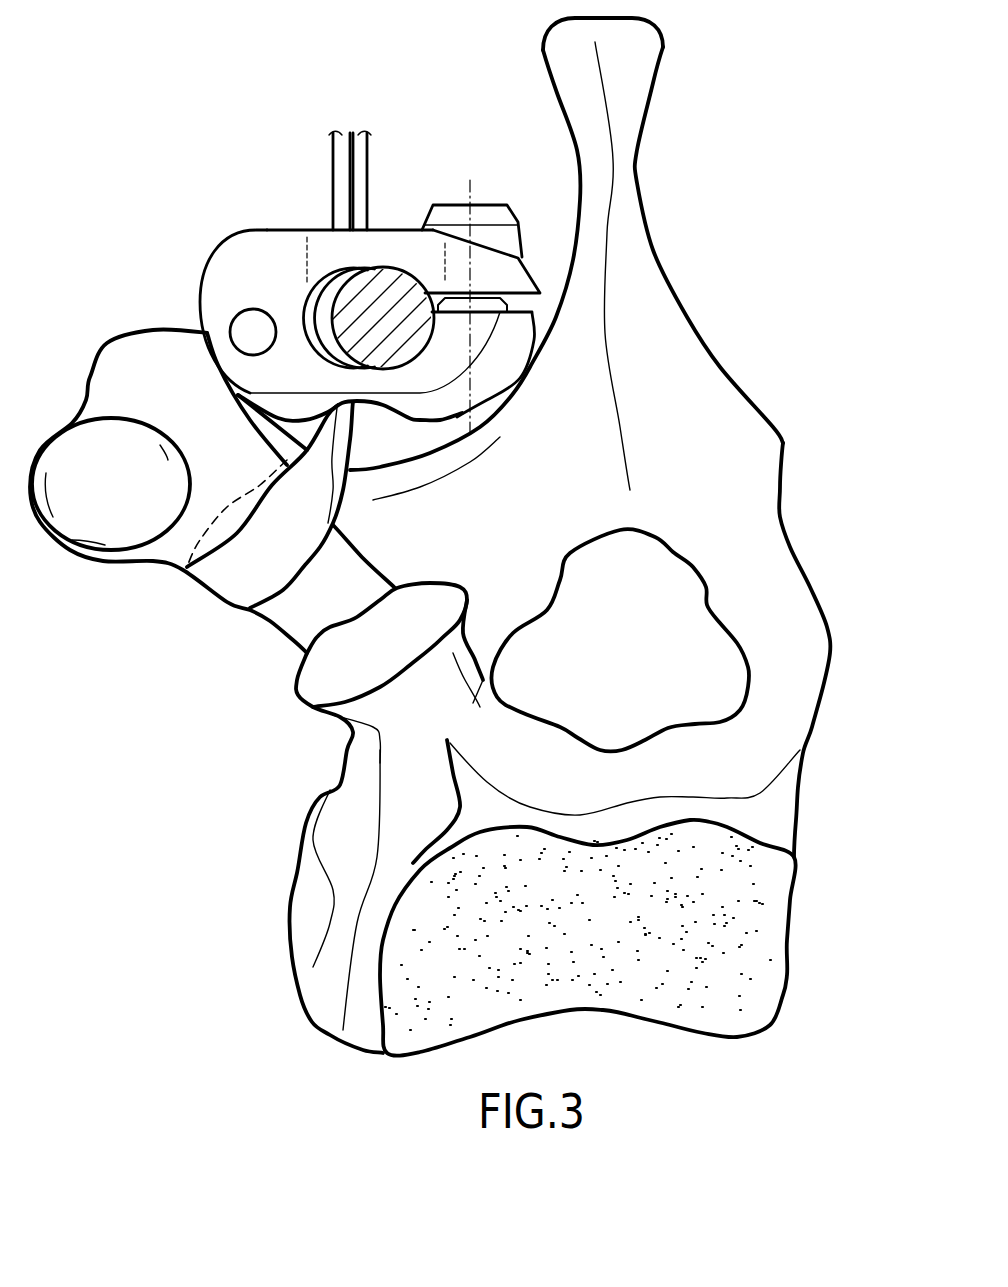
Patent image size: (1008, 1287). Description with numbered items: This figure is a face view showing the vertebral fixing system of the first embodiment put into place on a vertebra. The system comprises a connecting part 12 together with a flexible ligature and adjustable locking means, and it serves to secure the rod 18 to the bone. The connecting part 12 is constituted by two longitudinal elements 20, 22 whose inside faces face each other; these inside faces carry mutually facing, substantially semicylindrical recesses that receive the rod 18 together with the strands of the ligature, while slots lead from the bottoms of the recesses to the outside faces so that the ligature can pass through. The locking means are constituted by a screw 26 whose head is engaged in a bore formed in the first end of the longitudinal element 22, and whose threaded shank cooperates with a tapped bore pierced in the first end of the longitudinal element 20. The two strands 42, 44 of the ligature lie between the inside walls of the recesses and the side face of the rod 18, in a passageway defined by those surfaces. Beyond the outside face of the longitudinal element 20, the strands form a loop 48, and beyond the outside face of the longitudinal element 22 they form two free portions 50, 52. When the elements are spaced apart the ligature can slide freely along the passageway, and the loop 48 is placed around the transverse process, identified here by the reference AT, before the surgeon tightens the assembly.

The connecting part 12 is at (229, 218).
The rod 18 is at (385, 300).
The longitudinal element 20 is at (497, 373).
The longitudinal element 22 is at (236, 274).
The screw 26 is at (490, 212).
The strand 42 is at (304, 306).
The strand 44 is at (318, 364).
The loop 48 is at (233, 588).
The free portion 50 is at (367, 162).
The free portion 52 is at (333, 162).
The transverse process AT is at (87, 532).